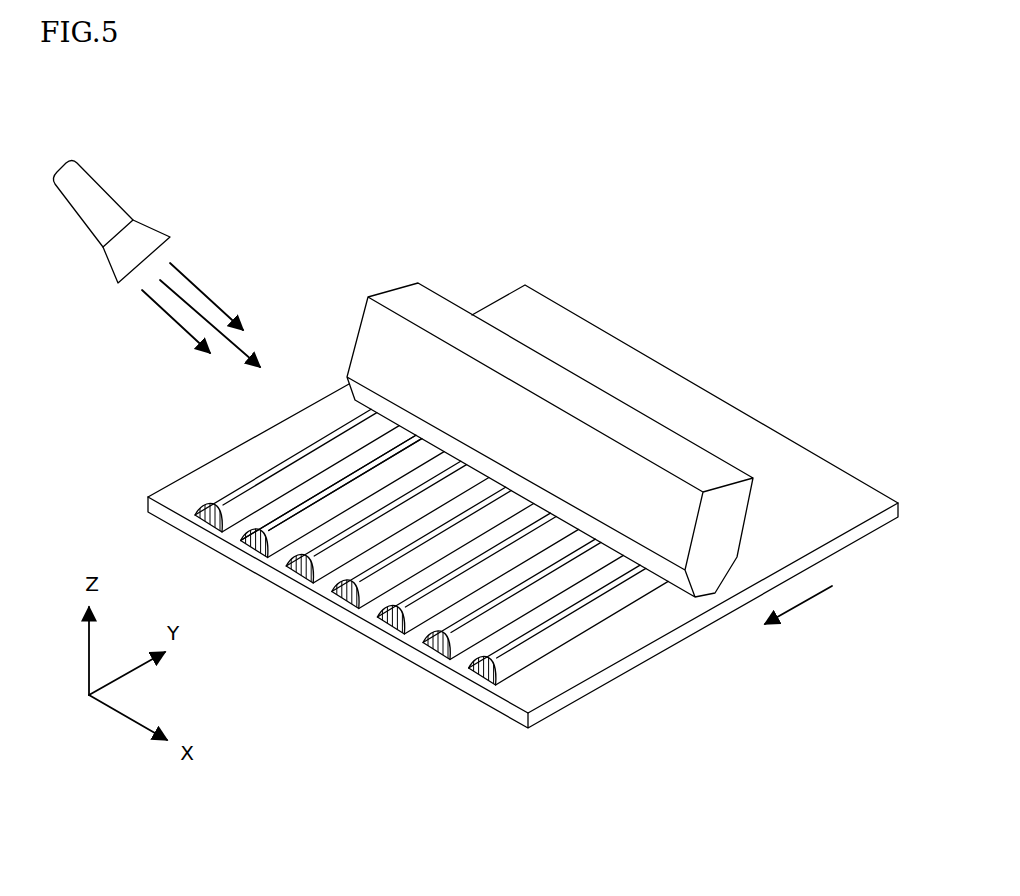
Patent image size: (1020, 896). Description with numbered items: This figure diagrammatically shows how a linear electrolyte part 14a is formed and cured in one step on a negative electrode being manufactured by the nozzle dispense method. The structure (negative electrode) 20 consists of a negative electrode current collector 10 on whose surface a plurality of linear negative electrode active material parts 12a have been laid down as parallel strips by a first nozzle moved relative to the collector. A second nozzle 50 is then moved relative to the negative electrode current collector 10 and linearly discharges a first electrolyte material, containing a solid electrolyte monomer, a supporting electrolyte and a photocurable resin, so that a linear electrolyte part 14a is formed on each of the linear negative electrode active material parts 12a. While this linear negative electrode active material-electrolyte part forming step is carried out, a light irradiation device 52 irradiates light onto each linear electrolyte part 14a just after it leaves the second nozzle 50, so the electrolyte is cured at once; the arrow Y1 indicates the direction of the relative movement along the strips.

The negative electrode current collector 10 is at (673, 402).
The linear negative electrode active material part 12a is at (299, 570).
The linear electrolyte part 14a is at (283, 520).
The structure (negative electrode) 20 is at (700, 656).
The second nozzle 50 is at (365, 345).
The light irradiation device 52 is at (97, 195).
The movement direction Y1 is at (798, 607).